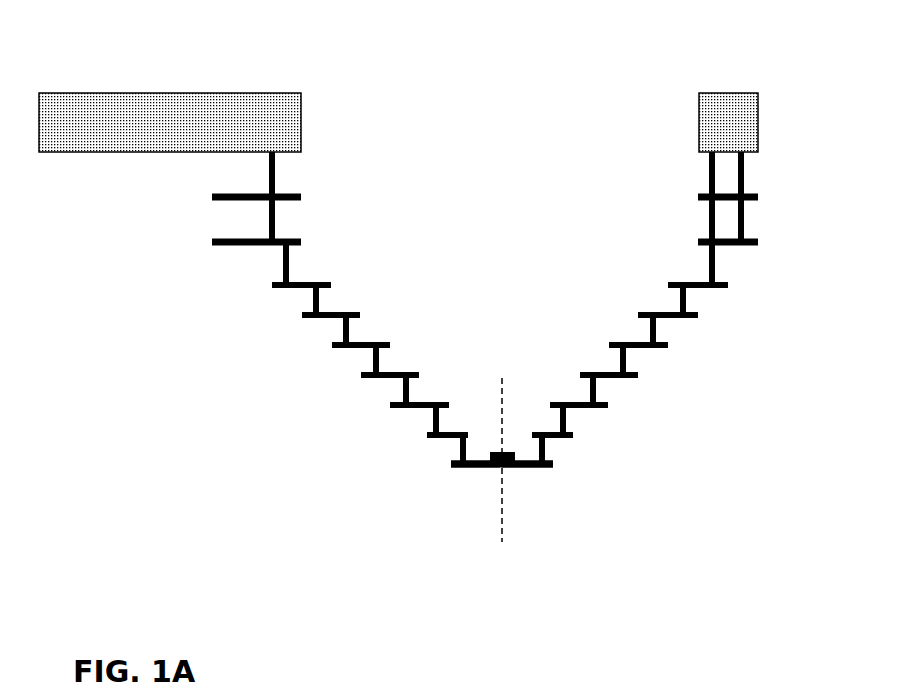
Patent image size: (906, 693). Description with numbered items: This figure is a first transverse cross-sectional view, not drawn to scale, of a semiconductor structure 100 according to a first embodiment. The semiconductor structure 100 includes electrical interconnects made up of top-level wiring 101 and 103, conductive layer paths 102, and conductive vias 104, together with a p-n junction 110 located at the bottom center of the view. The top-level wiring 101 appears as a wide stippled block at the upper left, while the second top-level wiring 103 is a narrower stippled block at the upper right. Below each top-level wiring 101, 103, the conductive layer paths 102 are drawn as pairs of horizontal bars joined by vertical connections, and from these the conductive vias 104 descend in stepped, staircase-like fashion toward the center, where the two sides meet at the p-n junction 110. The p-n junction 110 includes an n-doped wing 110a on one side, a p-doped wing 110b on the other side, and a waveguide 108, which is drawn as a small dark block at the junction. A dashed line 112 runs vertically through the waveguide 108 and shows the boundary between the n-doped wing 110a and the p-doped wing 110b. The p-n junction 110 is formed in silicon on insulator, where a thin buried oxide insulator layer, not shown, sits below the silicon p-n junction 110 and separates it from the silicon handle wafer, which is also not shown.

The semiconductor structure 100 is at (226, 505).
The top-level wiring 101 is at (225, 93).
The conductive layer paths 102 is at (238, 250).
The top-level wiring 103 is at (722, 93).
The conductive vias 104 is at (292, 270).
The waveguide 108 is at (495, 452).
The p-n junction 110 is at (553, 570).
The n-doped wing 110a is at (480, 470).
The p-doped wing 110b is at (525, 470).
The dashed line 112 is at (505, 378).